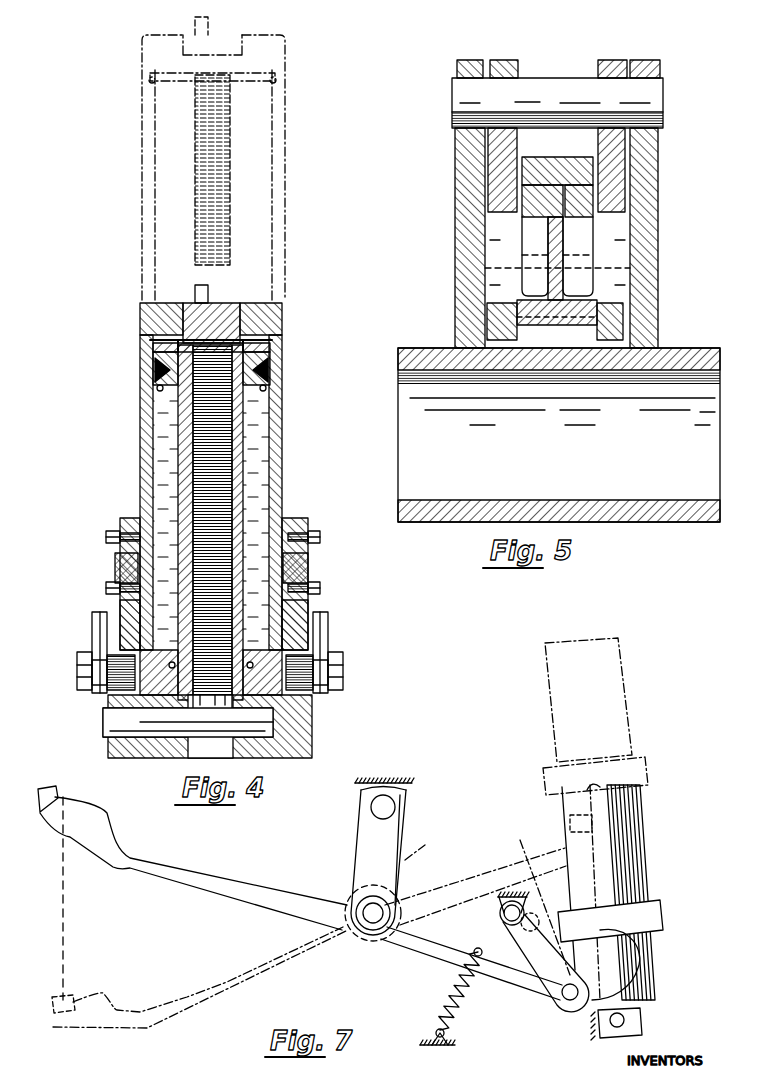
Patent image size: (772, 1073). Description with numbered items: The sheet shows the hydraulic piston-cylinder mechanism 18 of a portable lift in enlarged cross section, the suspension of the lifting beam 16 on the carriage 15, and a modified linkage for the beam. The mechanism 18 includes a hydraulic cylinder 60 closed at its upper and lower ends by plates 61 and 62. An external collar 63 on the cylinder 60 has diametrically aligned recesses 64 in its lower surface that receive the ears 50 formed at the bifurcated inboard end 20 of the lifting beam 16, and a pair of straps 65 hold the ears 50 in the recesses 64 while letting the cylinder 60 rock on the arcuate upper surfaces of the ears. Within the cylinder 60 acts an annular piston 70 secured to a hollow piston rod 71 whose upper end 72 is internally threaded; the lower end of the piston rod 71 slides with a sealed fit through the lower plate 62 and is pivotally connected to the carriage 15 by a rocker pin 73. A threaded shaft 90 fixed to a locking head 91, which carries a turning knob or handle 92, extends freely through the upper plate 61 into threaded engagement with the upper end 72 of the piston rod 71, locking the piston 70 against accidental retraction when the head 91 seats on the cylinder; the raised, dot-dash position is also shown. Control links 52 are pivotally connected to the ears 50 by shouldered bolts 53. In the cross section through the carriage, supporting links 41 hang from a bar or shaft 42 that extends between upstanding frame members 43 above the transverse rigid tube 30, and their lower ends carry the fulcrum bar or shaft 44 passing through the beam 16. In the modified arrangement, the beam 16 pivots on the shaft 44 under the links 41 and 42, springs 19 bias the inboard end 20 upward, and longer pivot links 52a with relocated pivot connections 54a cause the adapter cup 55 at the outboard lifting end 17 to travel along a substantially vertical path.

In FIG. 4, the carriage 15 is at (322, 730).
In FIG. 5, the carriage 15 is at (443, 346).
In FIG. 5, the lifting beam 16 is at (576, 155).
In FIG. 7, the lifting beam 16 is at (300, 893).
In FIG. 7, the outboard lifting end 17 is at (212, 885).
In FIG. 4, the hydraulic piston-cylinder mechanism 18 is at (140, 355).
In FIG. 7, the hydraulic piston-cylinder mechanism 18 is at (662, 885).
In FIG. 7, the springs 19 is at (445, 995).
In FIG. 7, the inboard end 20 is at (505, 876).
In FIG. 5, the transverse rigid tube 30 is at (690, 348).
In FIG. 5, the supporting links 41 is at (505, 60).
In FIG. 7, the supporting links 41 is at (405, 845).
In FIG. 5, the bar or shaft 42 is at (460, 98).
In FIG. 7, the bar or shaft 42 is at (372, 808).
In FIG. 5, the upstanding frame members 43 is at (455, 180).
In FIG. 5, the fulcrum bar or shaft 44 is at (610, 270).
In FIG. 7, the fulcrum bar or shaft 44 is at (372, 923).
In FIG. 4, the ears 50 is at (122, 608).
In FIG. 7, the ears 50 is at (632, 818).
In FIG. 4, the control links 52 is at (95, 636).
In FIG. 7, the pivot links 52a is at (530, 900).
In FIG. 4, the shouldered bolts 53 is at (78, 666).
In FIG. 7, the pivot connections 54a is at (504, 913).
In FIG. 7, the adapter cup 55 is at (75, 805).
In FIG. 4, the hydraulic cylinder 60 is at (142, 172).
In FIG. 7, the hydraulic cylinder 60 is at (628, 710).
In FIG. 4, the upper cylinder plate 61 is at (258, 88).
In FIG. 4, the lower cylinder plate 62 is at (260, 426).
In FIG. 4, the external collar 63 is at (125, 520).
In FIG. 4, the recesses 64 is at (115, 566).
In FIG. 4, the straps 65 is at (108, 545).
In FIG. 4, the annular piston 70 is at (160, 380).
In FIG. 7, the annular piston 70 is at (636, 1012).
In FIG. 4, the hollow piston rod 71 is at (178, 482).
In FIG. 4, the upper end of piston rod 72 is at (236, 396).
In FIG. 4, the rocker pin 73 is at (208, 736).
In FIG. 7, the rocker pin 73 is at (625, 1022).
In FIG. 4, the threaded shaft 90 is at (225, 474).
In FIG. 4, the locking head 91 is at (285, 52).
In FIG. 4, the turning knob or handle 92 is at (195, 25).